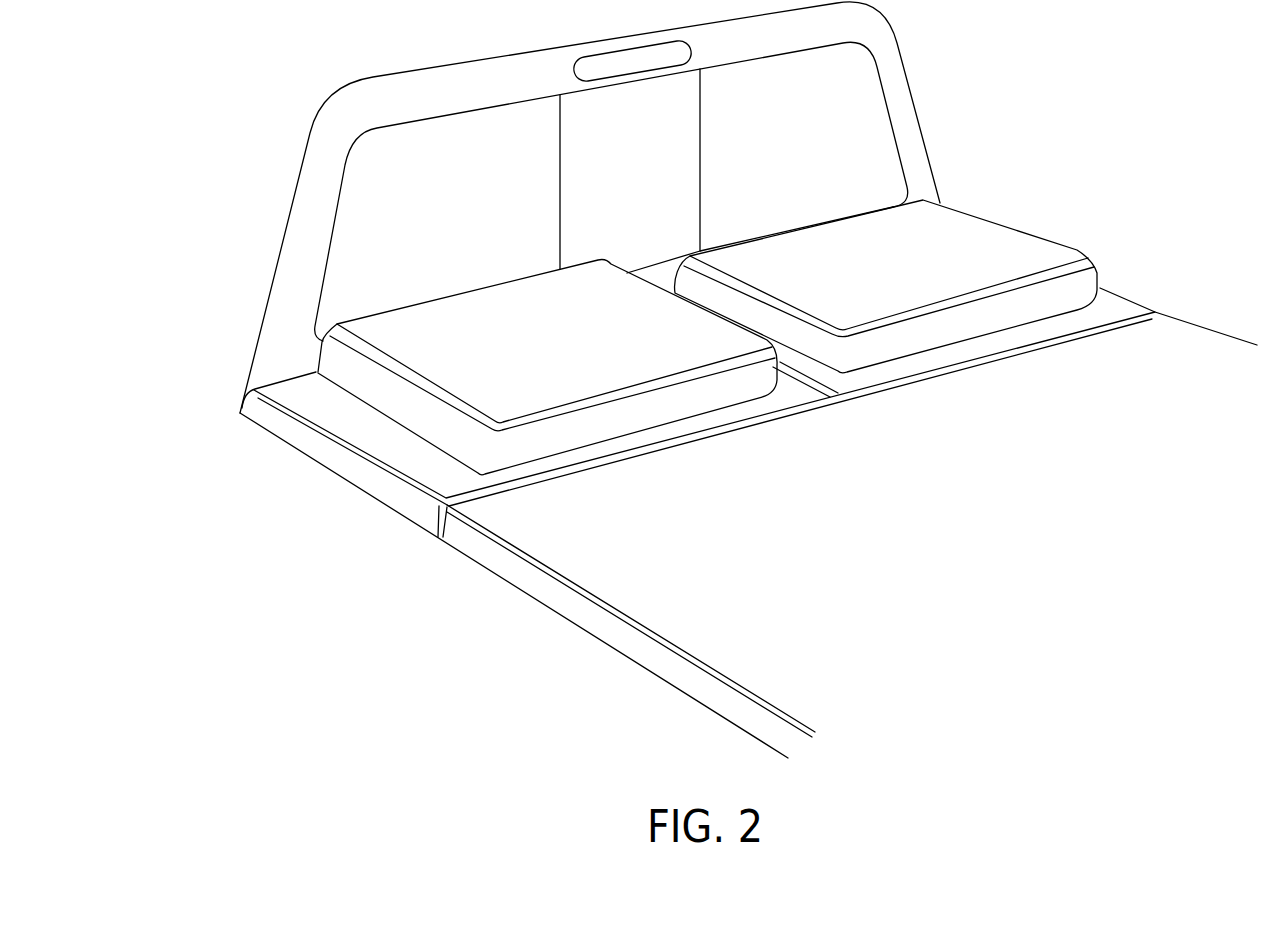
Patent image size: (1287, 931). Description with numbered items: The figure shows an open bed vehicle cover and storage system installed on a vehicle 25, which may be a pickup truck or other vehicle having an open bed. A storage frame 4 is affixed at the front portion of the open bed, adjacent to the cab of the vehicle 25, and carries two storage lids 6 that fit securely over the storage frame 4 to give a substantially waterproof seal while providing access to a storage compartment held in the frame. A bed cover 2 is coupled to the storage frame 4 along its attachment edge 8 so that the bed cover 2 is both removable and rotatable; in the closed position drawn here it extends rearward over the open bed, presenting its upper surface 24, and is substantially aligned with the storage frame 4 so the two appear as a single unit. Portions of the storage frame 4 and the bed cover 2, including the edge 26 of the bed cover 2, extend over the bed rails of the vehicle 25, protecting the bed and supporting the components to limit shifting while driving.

The bed cover 2 is at (887, 440).
The storage frame 4 is at (294, 415).
The storage lids 6 is at (925, 243).
The attachment edge 8 is at (434, 503).
The upper surface 24 is at (709, 588).
The vehicle 25 is at (293, 158).
The edge 26 is at (725, 710).